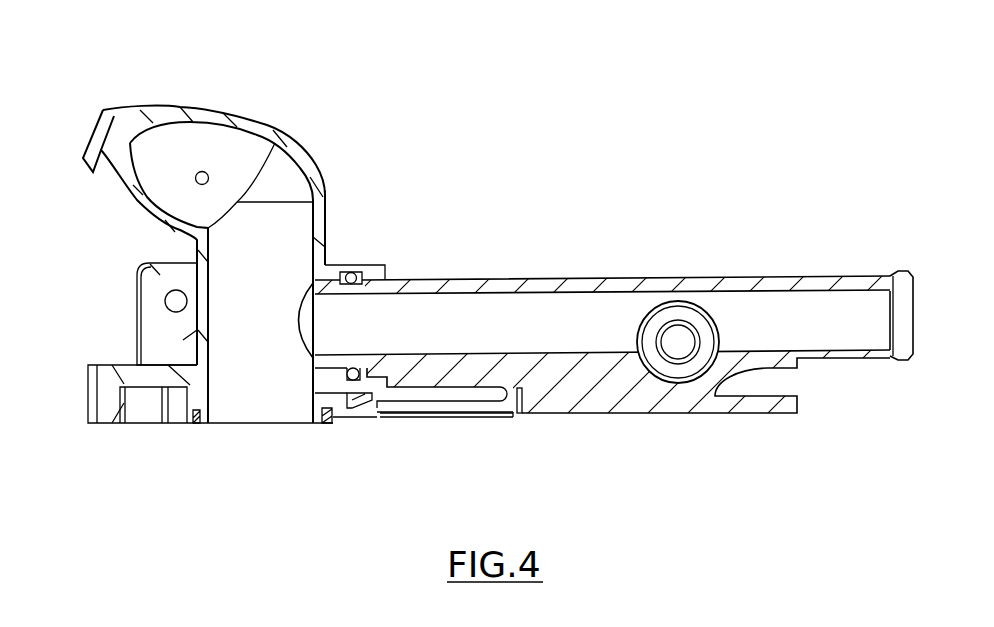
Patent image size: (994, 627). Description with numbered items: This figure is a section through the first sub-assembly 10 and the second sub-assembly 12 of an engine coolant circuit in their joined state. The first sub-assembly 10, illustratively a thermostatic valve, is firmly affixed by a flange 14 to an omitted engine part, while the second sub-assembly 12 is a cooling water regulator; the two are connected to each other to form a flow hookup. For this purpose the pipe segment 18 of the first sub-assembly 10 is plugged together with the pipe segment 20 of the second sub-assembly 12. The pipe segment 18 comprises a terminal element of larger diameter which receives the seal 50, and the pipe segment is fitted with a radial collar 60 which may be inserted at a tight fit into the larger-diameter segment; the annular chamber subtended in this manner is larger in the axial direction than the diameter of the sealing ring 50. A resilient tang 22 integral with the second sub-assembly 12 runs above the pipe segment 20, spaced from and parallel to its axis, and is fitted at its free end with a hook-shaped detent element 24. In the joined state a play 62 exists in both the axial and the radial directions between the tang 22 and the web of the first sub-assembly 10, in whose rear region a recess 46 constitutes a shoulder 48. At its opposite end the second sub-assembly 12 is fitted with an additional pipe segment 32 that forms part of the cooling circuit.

The first sub-assembly 10 is at (316, 130).
The second sub-assembly 12 is at (710, 267).
The flange 14 is at (122, 424).
The pipe segment 18 is at (347, 262).
The pipe segment 20 is at (452, 290).
The resilient tang 22 is at (408, 405).
The hook-shaped detent element 24 is at (368, 408).
The additional pipe segment 32 is at (840, 277).
The recess 46 is at (313, 397).
The shoulder 48 is at (352, 410).
The seal 50 is at (358, 273).
The radial collar 60 is at (400, 268).
The play 62 is at (507, 413).